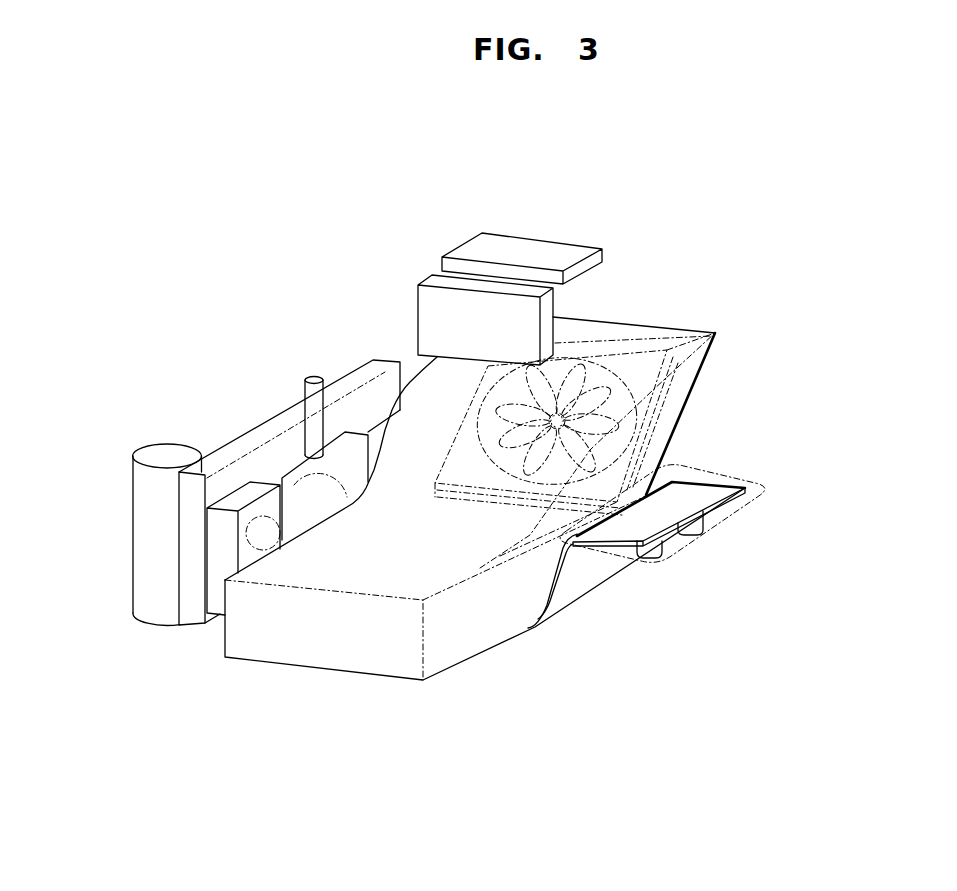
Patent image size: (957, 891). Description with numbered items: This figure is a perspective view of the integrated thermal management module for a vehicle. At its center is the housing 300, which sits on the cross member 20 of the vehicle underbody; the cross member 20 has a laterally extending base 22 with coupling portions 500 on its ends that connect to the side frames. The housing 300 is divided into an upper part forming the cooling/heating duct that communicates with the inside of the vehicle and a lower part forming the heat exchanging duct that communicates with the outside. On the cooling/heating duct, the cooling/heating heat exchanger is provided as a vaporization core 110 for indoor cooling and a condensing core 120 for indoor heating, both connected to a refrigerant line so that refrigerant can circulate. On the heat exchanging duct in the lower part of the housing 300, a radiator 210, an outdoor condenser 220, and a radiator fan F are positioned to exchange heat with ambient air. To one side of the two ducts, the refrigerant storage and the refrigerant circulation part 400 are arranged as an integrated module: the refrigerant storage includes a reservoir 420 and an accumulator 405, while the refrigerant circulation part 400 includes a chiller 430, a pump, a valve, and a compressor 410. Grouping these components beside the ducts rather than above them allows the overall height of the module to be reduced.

The cross member 20 is at (727, 505).
The base 22 is at (535, 630).
The vaporization core 110 is at (431, 280).
The condensing core 120 is at (528, 248).
The radiator 210 is at (657, 378).
The outdoor condenser 220 is at (655, 410).
The housing 300 is at (447, 652).
The refrigerant circulation part 400 is at (209, 425).
The accumulator 405 is at (149, 606).
The compressor 410 is at (305, 503).
The reservoir 420 is at (313, 375).
The chiller 430 is at (221, 550).
The coupling portions 500 is at (774, 490).
The radiator fan F is at (658, 340).